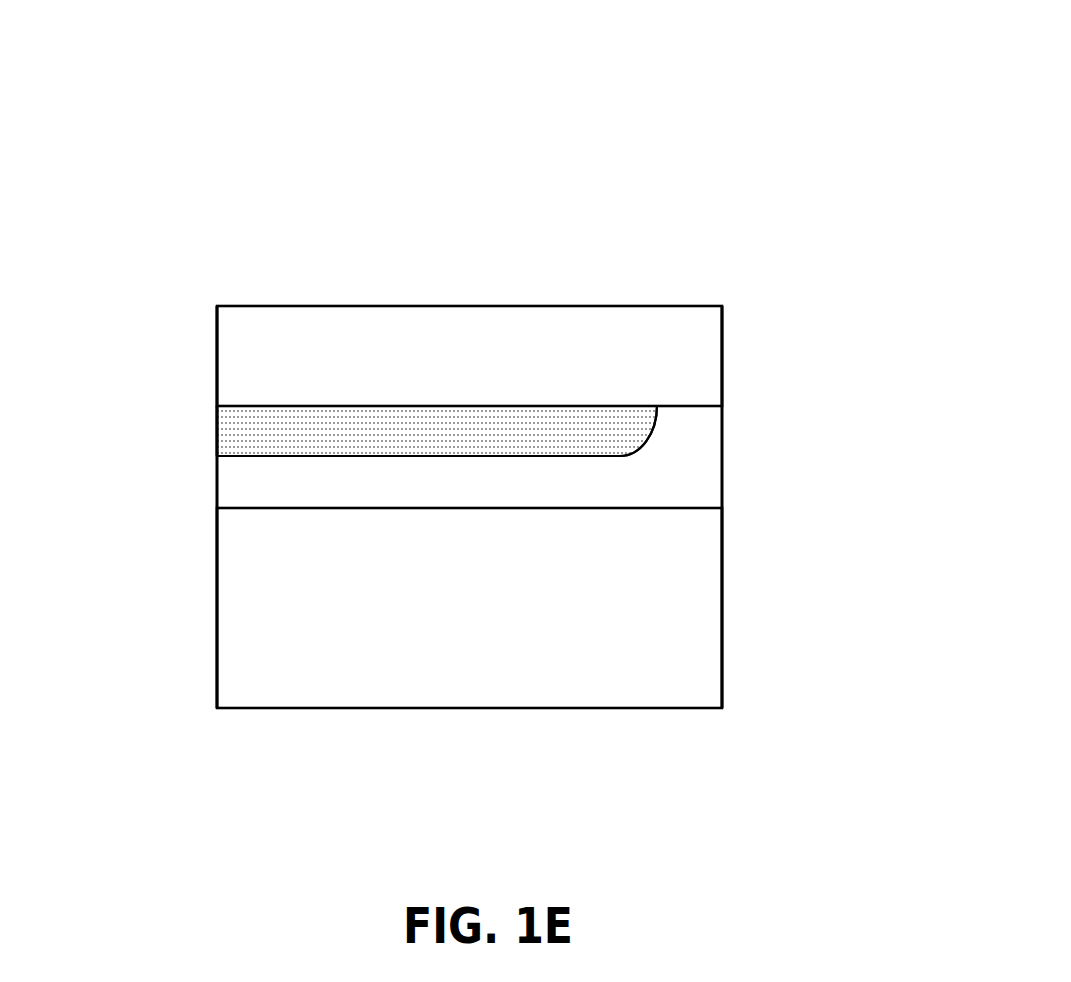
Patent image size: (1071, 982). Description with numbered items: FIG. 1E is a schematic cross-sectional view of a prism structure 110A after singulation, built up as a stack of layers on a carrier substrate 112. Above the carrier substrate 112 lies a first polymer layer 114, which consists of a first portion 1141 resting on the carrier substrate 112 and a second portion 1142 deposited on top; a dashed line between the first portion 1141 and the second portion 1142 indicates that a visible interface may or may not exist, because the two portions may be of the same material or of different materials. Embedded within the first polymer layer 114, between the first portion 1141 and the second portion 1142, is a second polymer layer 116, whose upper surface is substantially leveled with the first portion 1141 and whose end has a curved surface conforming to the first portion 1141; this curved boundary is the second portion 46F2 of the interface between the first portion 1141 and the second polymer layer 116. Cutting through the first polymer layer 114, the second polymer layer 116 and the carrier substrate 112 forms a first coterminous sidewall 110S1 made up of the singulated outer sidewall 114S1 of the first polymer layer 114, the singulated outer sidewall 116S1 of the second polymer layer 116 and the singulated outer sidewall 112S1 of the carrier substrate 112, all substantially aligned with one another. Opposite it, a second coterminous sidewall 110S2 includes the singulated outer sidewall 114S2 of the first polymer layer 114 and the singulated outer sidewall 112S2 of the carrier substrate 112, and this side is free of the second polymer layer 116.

The prism structure 110A is at (113, 15).
The carrier substrate 112 is at (258, 659).
The first polymer layer 114 is at (174, 38).
The first portion of the first polymer layer 1141 is at (258, 491).
The second portion of the first polymer layer 1142 is at (277, 328).
The second polymer layer 116 is at (232, 420).
The first coterminous sidewall 110S1 is at (433, 15).
The singulated outer sidewall of the carrier substrate 112S1 is at (137, 548).
The singulated outer sidewall of the first polymer layer 114S1 is at (158, 362).
The singulated outer sidewall of the second polymer layer 116S1 is at (158, 446).
The second coterminous sidewall 110S2 is at (857, 418).
The singulated outer sidewall of the carrier substrate 112S2 is at (732, 542).
The singulated outer sidewall of the first polymer layer 114S2 is at (732, 443).
The second portion of the interface 46F2 is at (636, 436).